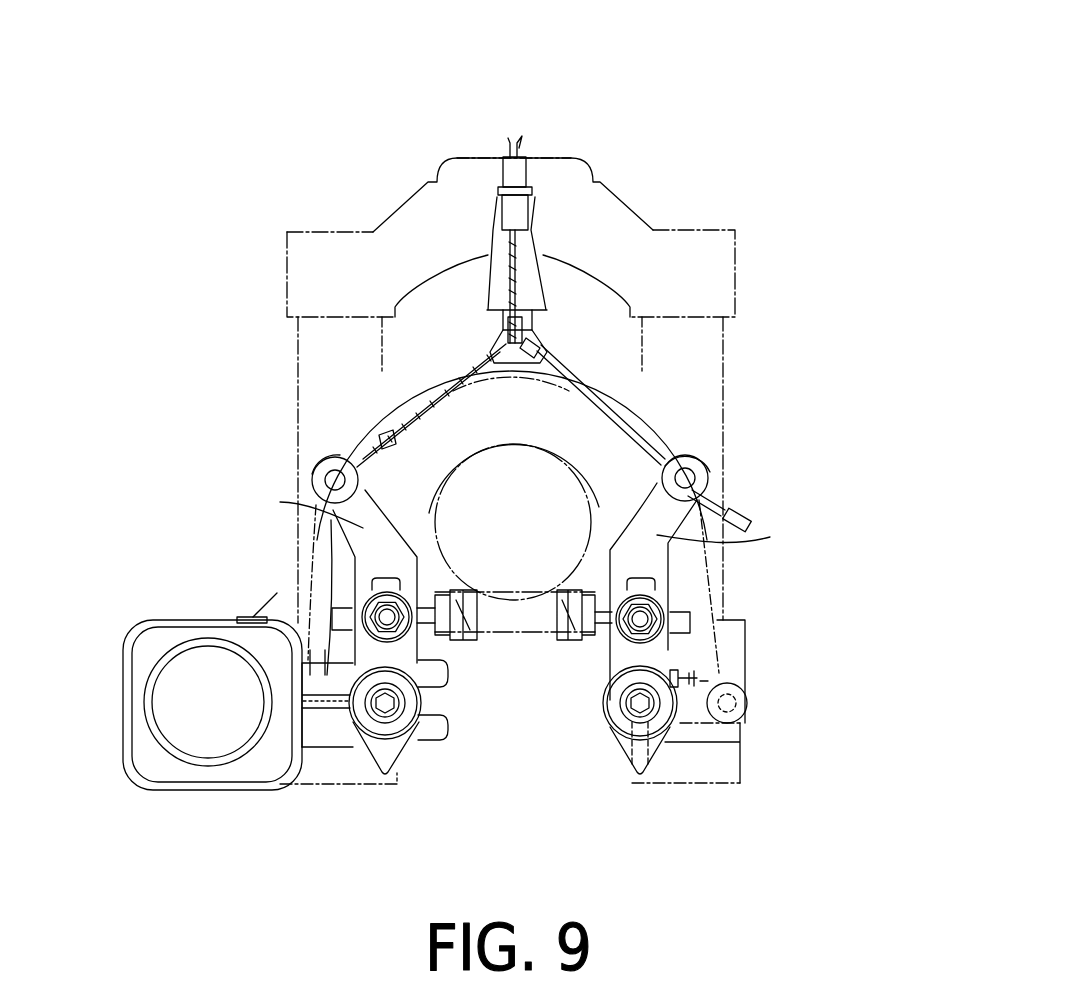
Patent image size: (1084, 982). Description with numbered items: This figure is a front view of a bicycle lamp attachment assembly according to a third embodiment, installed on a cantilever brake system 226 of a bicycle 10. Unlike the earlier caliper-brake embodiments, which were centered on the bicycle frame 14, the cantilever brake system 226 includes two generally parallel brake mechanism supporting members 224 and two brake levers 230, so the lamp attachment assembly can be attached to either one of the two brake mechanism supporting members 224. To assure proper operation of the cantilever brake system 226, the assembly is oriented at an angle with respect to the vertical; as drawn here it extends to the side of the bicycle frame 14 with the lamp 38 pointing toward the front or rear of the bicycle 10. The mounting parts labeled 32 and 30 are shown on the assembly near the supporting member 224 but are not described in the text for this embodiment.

The bicycle 10 is at (541, 429).
The bicycle frame 14 is at (703, 360).
The lamp 38 is at (208, 738).
The mounting bracket 32 is at (330, 672).
The brake shoe 30 is at (343, 730).
The brake mechanism supporting member 224 is at (397, 707).
The brake lever 230 is at (363, 530).
The cantilever brake system 226 is at (698, 647).